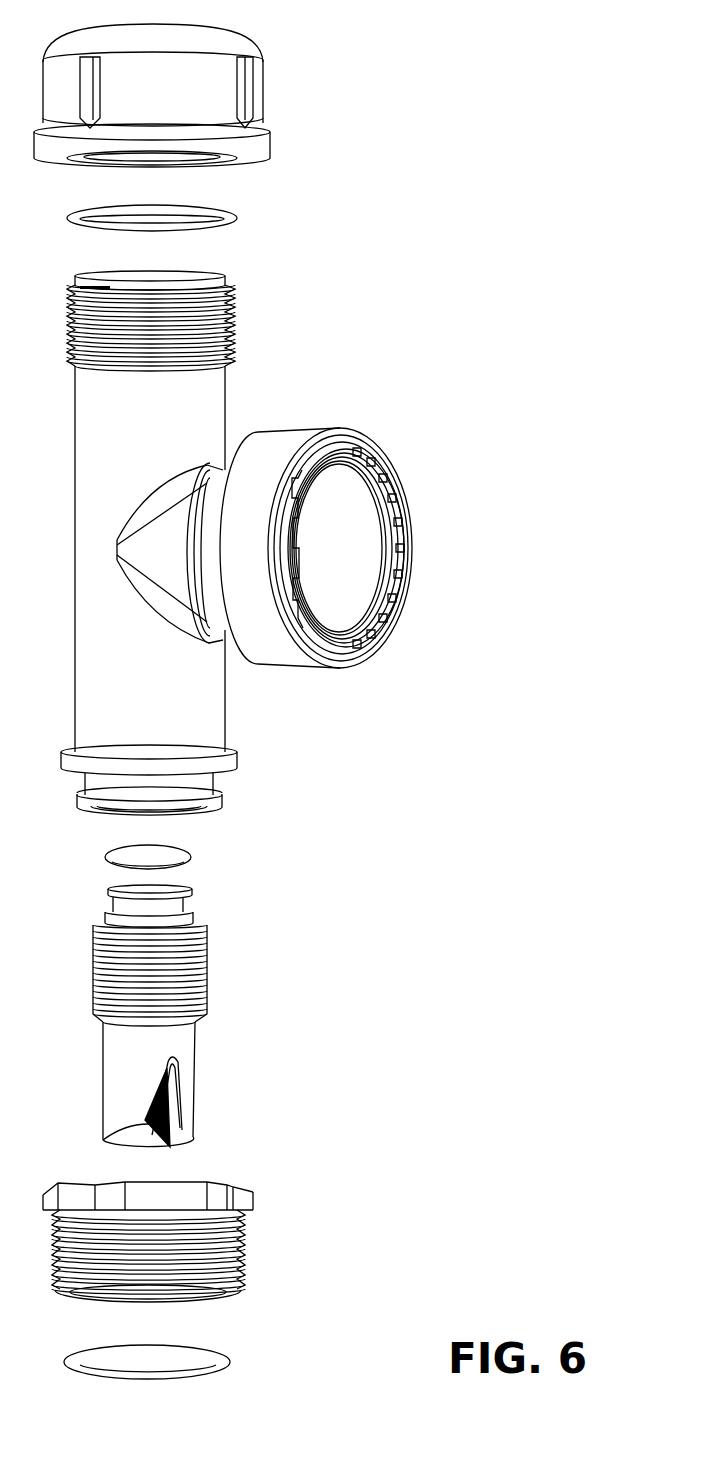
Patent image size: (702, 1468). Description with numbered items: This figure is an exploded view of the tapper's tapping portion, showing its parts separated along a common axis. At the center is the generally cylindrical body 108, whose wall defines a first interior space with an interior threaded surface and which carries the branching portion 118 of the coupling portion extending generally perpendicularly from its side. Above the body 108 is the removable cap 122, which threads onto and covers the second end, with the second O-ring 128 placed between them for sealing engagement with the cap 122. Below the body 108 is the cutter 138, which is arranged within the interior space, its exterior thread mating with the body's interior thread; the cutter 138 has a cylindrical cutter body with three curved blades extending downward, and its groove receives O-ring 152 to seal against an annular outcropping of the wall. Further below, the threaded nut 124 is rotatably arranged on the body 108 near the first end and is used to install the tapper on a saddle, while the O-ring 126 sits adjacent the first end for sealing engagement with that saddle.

The removable cap 122 is at (263, 98).
The second O-ring 128 is at (235, 211).
The body 108 is at (225, 717).
The branching portion 118 is at (287, 430).
The O-ring 152 is at (191, 852).
The cutter 138 is at (195, 1037).
The threaded nut 124 is at (253, 1193).
The O-ring 126 is at (230, 1352).